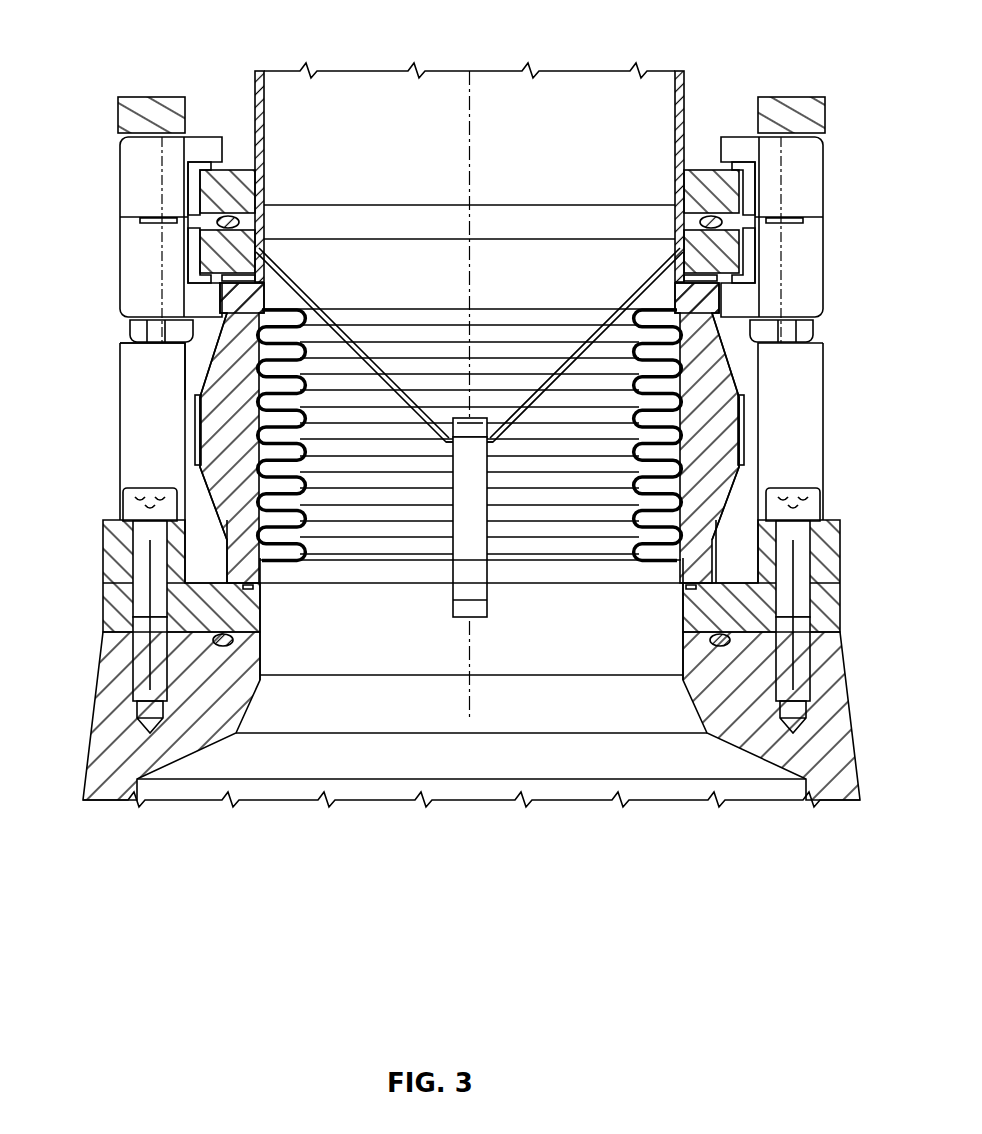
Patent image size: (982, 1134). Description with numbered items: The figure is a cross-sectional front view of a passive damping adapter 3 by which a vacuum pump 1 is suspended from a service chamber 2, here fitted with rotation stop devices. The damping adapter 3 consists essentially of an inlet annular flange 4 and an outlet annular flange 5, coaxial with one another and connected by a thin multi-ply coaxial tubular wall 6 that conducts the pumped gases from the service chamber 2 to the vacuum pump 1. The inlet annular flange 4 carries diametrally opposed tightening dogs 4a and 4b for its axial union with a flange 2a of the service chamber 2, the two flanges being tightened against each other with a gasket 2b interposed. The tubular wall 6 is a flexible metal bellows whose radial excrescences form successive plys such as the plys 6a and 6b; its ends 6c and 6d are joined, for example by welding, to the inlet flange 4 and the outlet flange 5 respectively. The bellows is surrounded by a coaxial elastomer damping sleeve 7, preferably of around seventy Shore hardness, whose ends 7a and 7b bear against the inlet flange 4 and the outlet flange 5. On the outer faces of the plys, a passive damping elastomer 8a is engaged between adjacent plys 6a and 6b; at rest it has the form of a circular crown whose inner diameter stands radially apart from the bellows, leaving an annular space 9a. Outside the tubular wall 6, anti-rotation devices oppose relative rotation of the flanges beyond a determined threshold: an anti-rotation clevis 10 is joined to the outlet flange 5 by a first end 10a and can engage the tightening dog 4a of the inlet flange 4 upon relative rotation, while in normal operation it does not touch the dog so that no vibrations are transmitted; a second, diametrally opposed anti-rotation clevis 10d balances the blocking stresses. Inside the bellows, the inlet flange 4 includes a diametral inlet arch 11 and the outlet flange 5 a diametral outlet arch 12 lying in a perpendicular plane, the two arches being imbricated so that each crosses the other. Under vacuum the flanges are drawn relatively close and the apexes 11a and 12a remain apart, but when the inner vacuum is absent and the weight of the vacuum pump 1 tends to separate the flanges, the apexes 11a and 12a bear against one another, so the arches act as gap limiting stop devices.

The vacuum pump 1 is at (68, 780).
The service chamber 2 is at (250, 90).
The flange 2a is at (747, 165).
The gasket 2b is at (740, 232).
The damping adapter 3 is at (188, 438).
The inlet annular flange 4 is at (746, 262).
The tightening dog 4a is at (797, 178).
The tightening dog 4b is at (120, 176).
The outlet annular flange 5 is at (838, 600).
The tubular wall 6 is at (232, 453).
The ply 6a is at (227, 357).
The ply 6b is at (223, 403).
The end 6c is at (268, 296).
The end 6d is at (248, 588).
The damping sleeve 7 is at (200, 488).
The end 7a is at (230, 285).
The end 7b is at (162, 537).
The damping elastomer 8a is at (232, 380).
The annular space 9a is at (303, 373).
The anti-rotation clevis 10 is at (794, 408).
The first end 10a is at (840, 513).
The anti-rotation clevis 10d is at (130, 358).
The inlet arch 11 is at (590, 335).
The apex 11a is at (466, 445).
The outlet arch 12 is at (473, 578).
The apex 12a is at (473, 417).